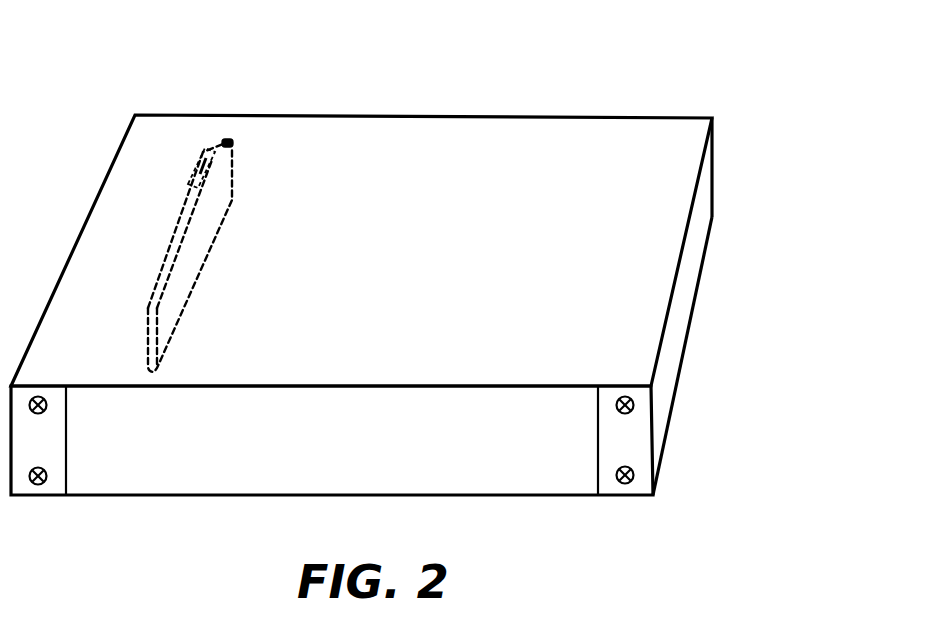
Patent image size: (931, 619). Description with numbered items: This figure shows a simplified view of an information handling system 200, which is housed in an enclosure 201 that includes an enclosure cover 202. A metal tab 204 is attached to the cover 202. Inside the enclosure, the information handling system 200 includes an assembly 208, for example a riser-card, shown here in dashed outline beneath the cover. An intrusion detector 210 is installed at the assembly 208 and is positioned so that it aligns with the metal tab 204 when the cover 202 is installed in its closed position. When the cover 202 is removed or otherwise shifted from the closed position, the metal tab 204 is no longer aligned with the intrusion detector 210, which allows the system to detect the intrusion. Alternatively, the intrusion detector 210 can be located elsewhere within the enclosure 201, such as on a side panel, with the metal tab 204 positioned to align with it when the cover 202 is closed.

The information handling system 200 is at (714, 81).
The enclosure 201 is at (673, 322).
The enclosure cover 202 is at (692, 220).
The metal tab 204 is at (205, 160).
The assembly 208 is at (208, 260).
The intrusion detector 210 is at (198, 163).